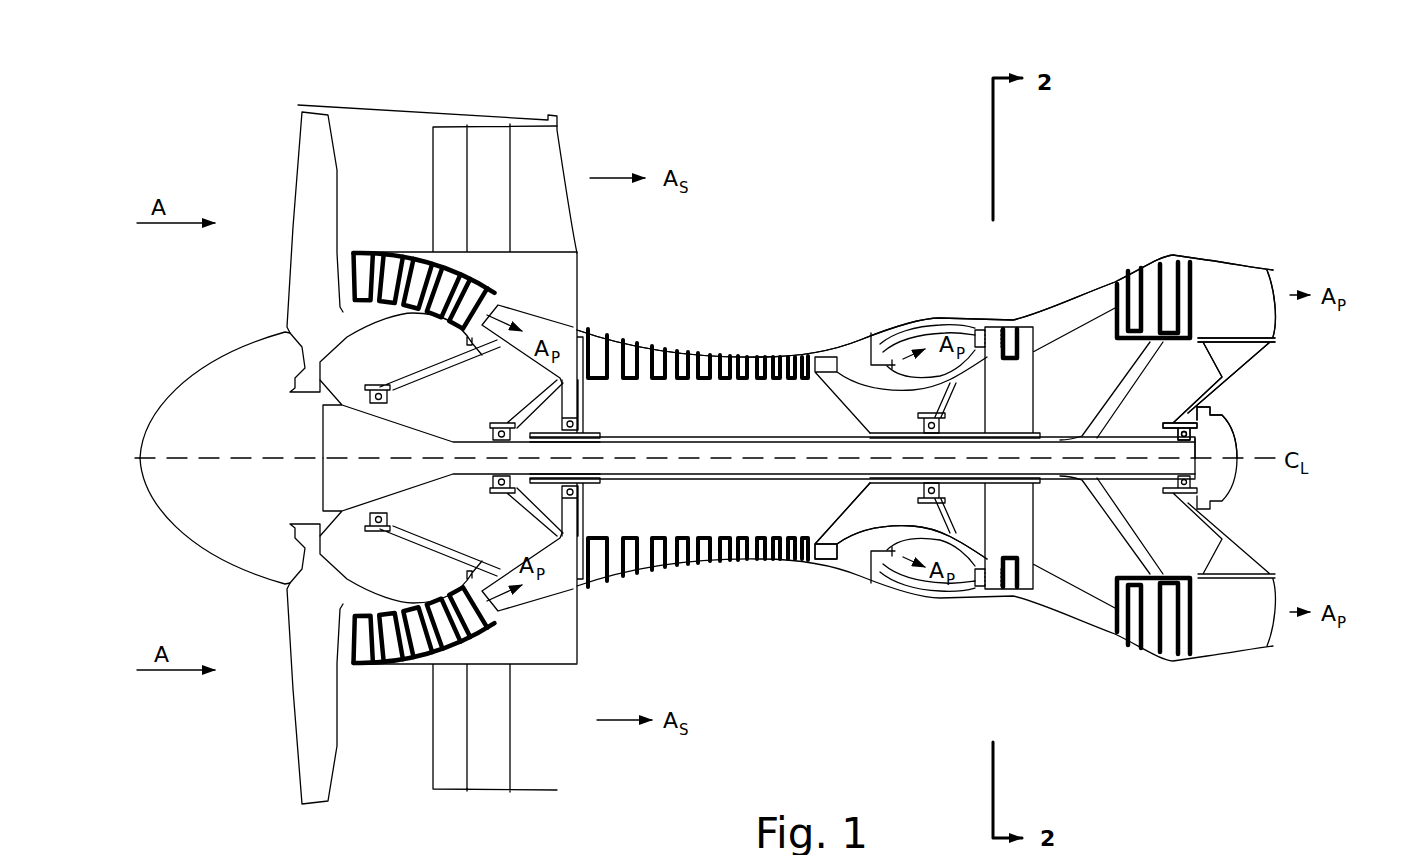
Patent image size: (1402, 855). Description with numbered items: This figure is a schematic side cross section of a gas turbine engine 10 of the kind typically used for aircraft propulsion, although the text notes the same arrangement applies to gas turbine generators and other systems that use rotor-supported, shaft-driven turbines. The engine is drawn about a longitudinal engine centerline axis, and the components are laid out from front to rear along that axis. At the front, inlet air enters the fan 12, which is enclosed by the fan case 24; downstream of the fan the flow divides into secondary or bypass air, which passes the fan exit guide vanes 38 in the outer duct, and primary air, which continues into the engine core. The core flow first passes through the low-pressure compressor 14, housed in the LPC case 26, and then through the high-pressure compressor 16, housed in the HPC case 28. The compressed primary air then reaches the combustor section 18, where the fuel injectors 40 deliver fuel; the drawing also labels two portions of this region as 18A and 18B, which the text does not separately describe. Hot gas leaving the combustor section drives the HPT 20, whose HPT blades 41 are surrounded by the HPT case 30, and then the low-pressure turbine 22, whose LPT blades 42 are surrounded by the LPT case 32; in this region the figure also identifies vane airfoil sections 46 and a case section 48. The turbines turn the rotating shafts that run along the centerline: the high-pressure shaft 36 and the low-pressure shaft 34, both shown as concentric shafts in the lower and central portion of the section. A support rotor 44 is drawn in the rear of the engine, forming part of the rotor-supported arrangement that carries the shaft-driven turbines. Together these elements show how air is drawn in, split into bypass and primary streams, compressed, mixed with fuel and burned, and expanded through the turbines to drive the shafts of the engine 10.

The gas turbine engine 10 is at (1068, 176).
The fan 12 is at (292, 717).
The low-pressure compressor 14 is at (415, 658).
The high-pressure compressor 16 is at (748, 586).
The combustor section 18 is at (937, 620).
The combustor inner liner 18A is at (920, 577).
The combustor outer liner 18B is at (965, 337).
The HPT 20 is at (998, 615).
The low-pressure turbine 22 is at (1118, 666).
The fan case 24 is at (403, 122).
The LPC case 26 is at (412, 263).
The HPC case 28 is at (703, 352).
The HPT case 30 is at (1073, 298).
The LPT case 32 is at (1187, 253).
The low-pressure shaft 34 is at (795, 450).
The high-pressure shaft 36 is at (858, 557).
The fan exit guide vanes 38 is at (492, 223).
The fuel injectors 40 is at (875, 334).
The HPT blades 41 is at (1027, 600).
The LPT blades 42 is at (1117, 282).
The support rotor 44 is at (1123, 392).
The vane airfoil sections 46 is at (1140, 282).
The case section 48 is at (1152, 255).